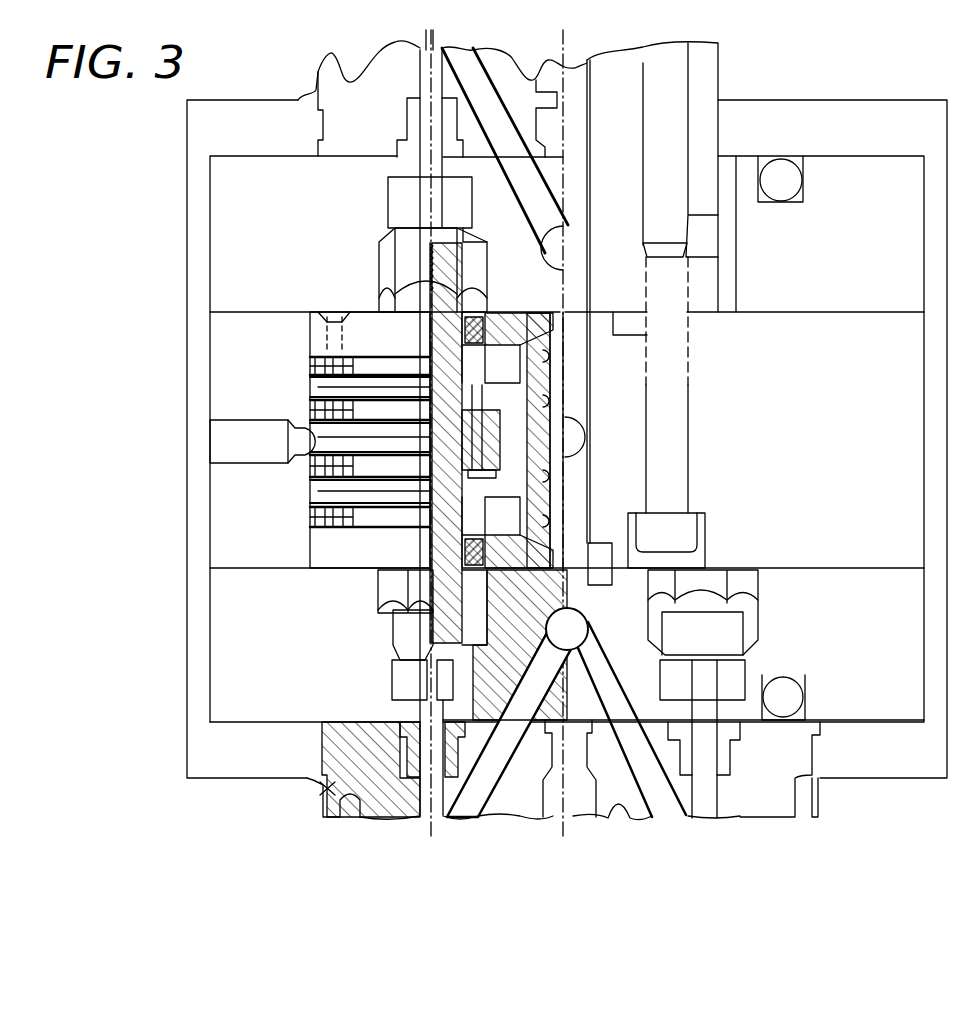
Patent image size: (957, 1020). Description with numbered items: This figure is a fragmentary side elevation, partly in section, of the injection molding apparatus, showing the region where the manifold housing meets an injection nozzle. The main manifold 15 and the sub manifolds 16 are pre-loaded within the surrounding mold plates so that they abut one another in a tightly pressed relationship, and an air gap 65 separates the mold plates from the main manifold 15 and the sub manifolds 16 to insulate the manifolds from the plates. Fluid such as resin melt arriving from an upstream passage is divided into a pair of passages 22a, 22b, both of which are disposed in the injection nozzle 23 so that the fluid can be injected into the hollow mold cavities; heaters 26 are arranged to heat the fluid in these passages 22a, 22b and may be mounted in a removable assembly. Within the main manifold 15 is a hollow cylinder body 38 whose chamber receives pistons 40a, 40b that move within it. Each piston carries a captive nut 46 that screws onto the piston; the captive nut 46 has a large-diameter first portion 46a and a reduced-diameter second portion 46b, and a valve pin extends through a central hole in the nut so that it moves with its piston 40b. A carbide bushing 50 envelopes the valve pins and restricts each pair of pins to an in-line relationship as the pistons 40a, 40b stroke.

The main manifold 15 is at (215, 492).
The sub manifold 16 is at (215, 240).
The passage 22a is at (470, 805).
The passage 22b is at (665, 805).
The injection nozzle 23 is at (340, 777).
The heater 26 is at (805, 700).
The cylinder body 38 is at (320, 385).
The piston 40a is at (560, 368).
The piston 40b is at (560, 478).
The captive nut 46 is at (385, 290).
The first portion of captive nut 46a is at (385, 590).
The second portion of captive nut 46b is at (405, 632).
The bushing 50 is at (408, 726).
The air gap 65 is at (215, 745).